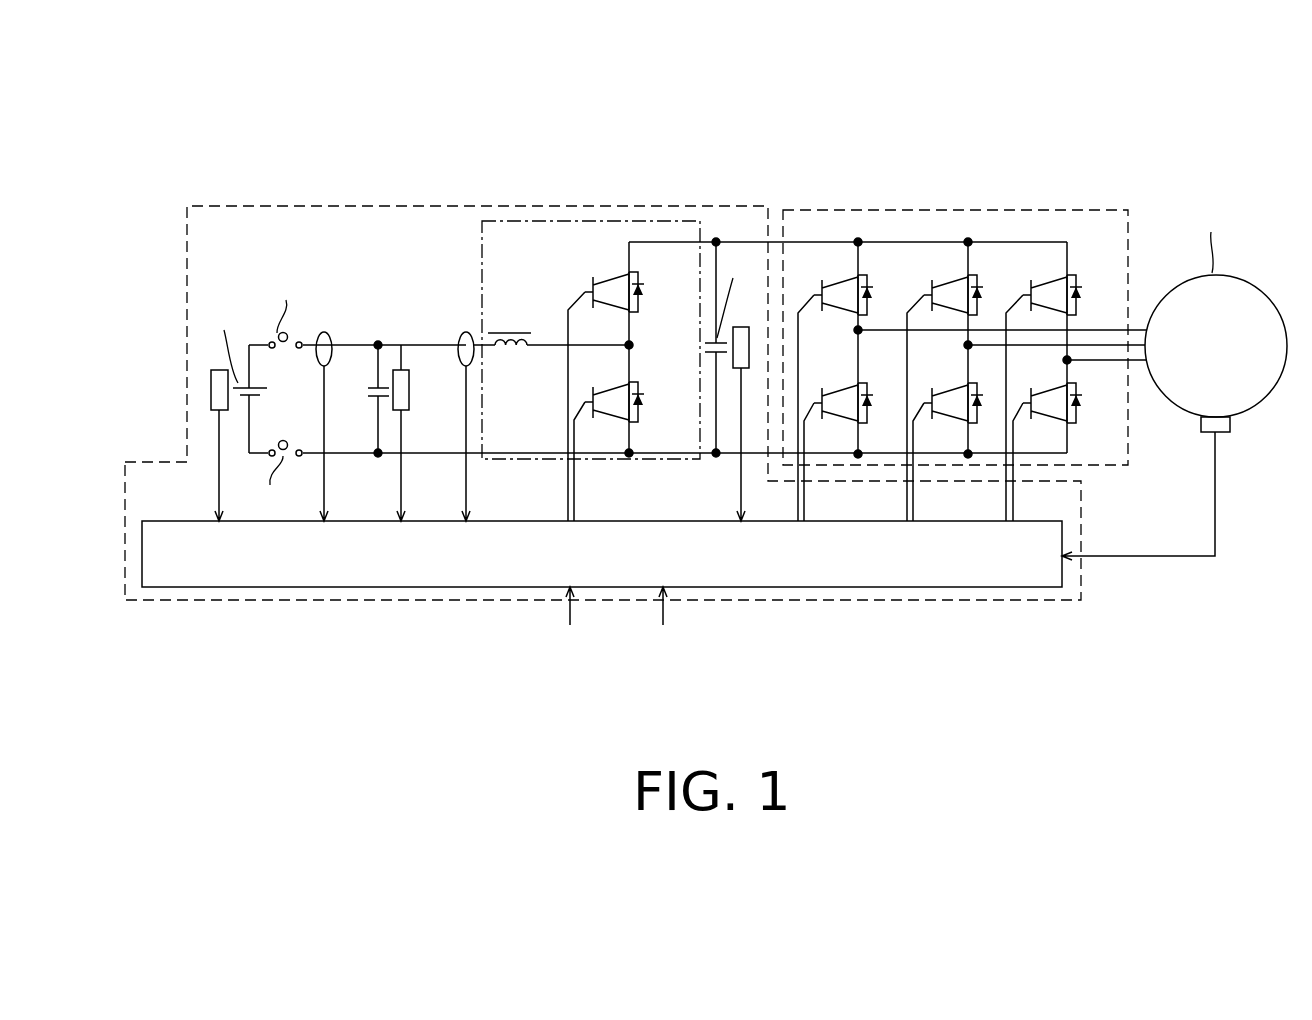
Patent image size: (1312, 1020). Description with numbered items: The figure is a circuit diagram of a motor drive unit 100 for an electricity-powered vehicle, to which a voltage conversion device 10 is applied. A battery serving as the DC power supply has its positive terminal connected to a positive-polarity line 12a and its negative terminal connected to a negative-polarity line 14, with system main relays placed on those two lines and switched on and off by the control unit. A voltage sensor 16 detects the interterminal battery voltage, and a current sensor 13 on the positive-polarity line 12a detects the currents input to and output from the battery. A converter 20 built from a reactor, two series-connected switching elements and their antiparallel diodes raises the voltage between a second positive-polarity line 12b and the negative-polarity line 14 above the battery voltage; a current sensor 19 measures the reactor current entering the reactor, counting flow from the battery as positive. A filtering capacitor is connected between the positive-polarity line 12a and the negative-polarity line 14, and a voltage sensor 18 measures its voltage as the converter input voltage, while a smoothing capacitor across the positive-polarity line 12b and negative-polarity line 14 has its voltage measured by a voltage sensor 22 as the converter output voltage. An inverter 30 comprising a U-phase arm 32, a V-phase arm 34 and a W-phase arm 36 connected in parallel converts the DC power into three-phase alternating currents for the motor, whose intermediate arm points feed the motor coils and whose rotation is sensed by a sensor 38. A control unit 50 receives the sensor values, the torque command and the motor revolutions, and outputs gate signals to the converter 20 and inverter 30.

The motor drive unit 100 is at (871, 126).
The voltage conversion device 10 is at (545, 206).
The positive-polarity line 12a is at (405, 343).
The positive-polarity line 12b is at (798, 242).
The current sensor 13 is at (330, 337).
The negative-polarity line 14 is at (512, 449).
The voltage sensor 16 is at (211, 390).
The voltage sensor 18 is at (410, 392).
The current sensor 19 is at (463, 333).
The converter 20 is at (481, 246).
The voltage sensor 22 is at (743, 325).
The inverter 30 is at (1036, 208).
The U-phase arm 32 is at (861, 257).
The V-phase arm 34 is at (969, 258).
The W-phase arm 36 is at (1068, 247).
The rotation angle sensor 38 is at (1230, 425).
The control unit 50 is at (400, 587).